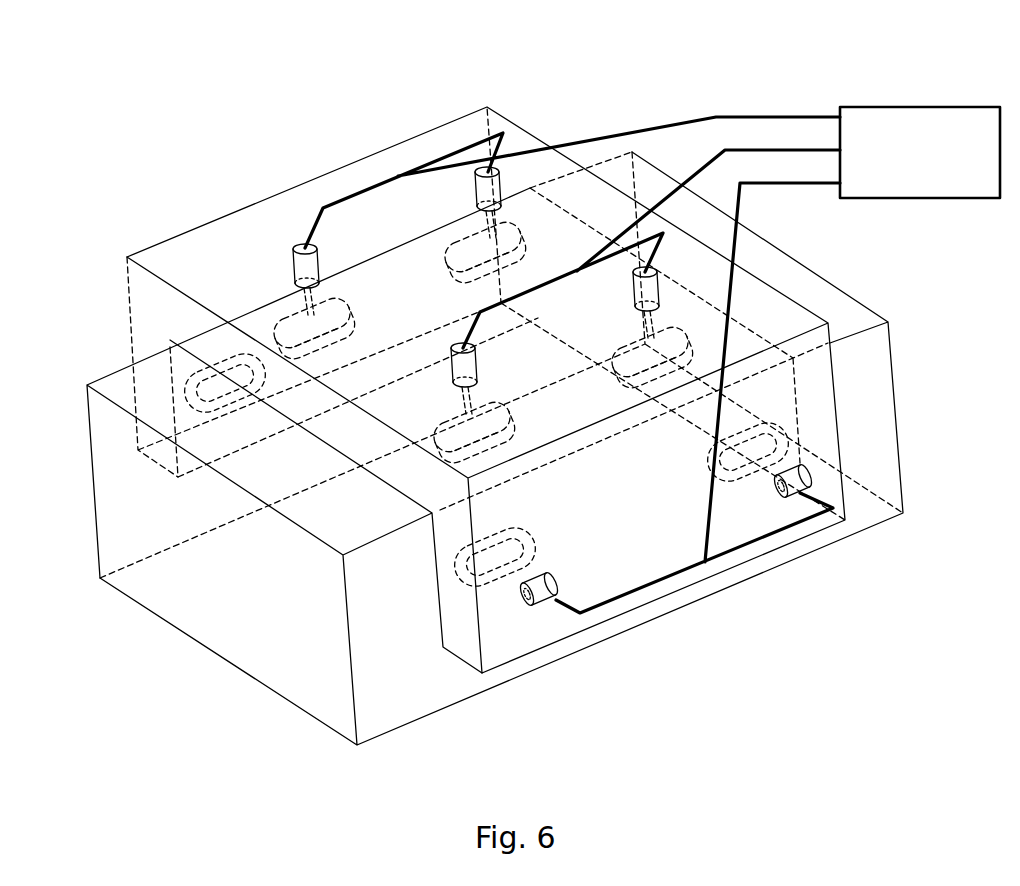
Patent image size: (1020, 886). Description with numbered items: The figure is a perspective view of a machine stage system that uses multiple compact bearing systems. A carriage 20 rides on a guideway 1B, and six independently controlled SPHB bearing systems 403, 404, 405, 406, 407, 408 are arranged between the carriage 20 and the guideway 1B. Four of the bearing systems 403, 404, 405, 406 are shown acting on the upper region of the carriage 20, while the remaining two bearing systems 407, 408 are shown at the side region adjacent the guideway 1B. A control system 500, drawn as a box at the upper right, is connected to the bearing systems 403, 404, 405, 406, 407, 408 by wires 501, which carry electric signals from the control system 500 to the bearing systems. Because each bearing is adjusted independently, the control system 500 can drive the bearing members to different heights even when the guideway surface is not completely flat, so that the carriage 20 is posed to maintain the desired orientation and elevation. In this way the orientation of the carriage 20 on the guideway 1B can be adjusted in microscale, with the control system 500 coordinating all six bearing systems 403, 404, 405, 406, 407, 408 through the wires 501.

The guideway 1B is at (128, 372).
The carriage 20 is at (187, 250).
The SPHB bearing system 403 is at (295, 247).
The SPHB bearing system 404 is at (477, 190).
The SPHB bearing system 405 is at (480, 365).
The SPHB bearing system 406 is at (628, 292).
The SPHB bearing system 407 is at (533, 605).
The SPHB bearing system 408 is at (803, 473).
The control system 500 is at (937, 105).
The wires 501 is at (690, 118).